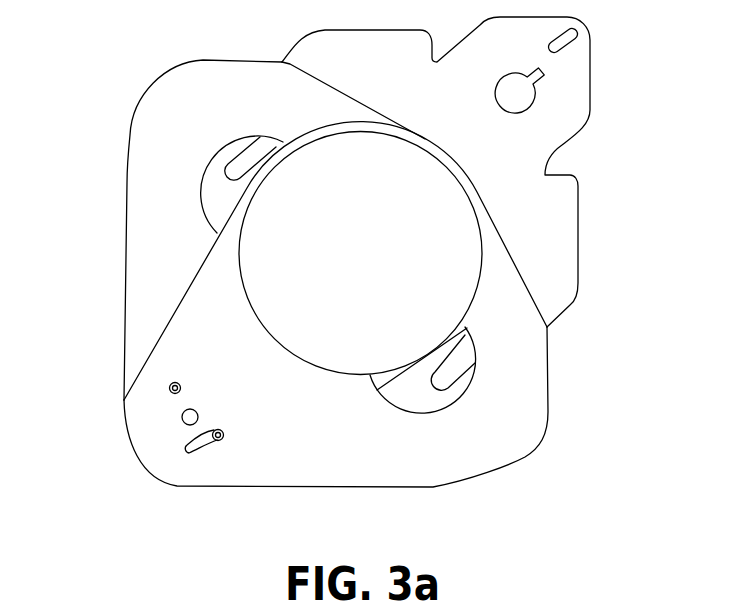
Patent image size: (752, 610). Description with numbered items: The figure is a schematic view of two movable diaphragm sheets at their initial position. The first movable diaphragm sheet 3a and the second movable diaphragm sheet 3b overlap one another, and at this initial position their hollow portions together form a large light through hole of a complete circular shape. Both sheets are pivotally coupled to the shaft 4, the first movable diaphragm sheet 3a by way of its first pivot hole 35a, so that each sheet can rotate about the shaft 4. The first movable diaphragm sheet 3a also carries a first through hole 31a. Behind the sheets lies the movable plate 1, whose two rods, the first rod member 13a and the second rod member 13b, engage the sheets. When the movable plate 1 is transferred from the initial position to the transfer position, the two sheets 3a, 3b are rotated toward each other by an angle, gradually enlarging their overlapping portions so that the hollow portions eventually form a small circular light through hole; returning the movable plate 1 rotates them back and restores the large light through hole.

The movable plate 1 is at (572, 88).
The first movable diaphragm sheet 3a is at (134, 279).
The second movable diaphragm sheet 3b is at (533, 370).
The first rod member 13a is at (169, 388).
The second rod member 13b is at (219, 441).
The shaft 4 is at (182, 417).
The first pivot hole 35a is at (182, 421).
The first through hole 31a is at (183, 453).